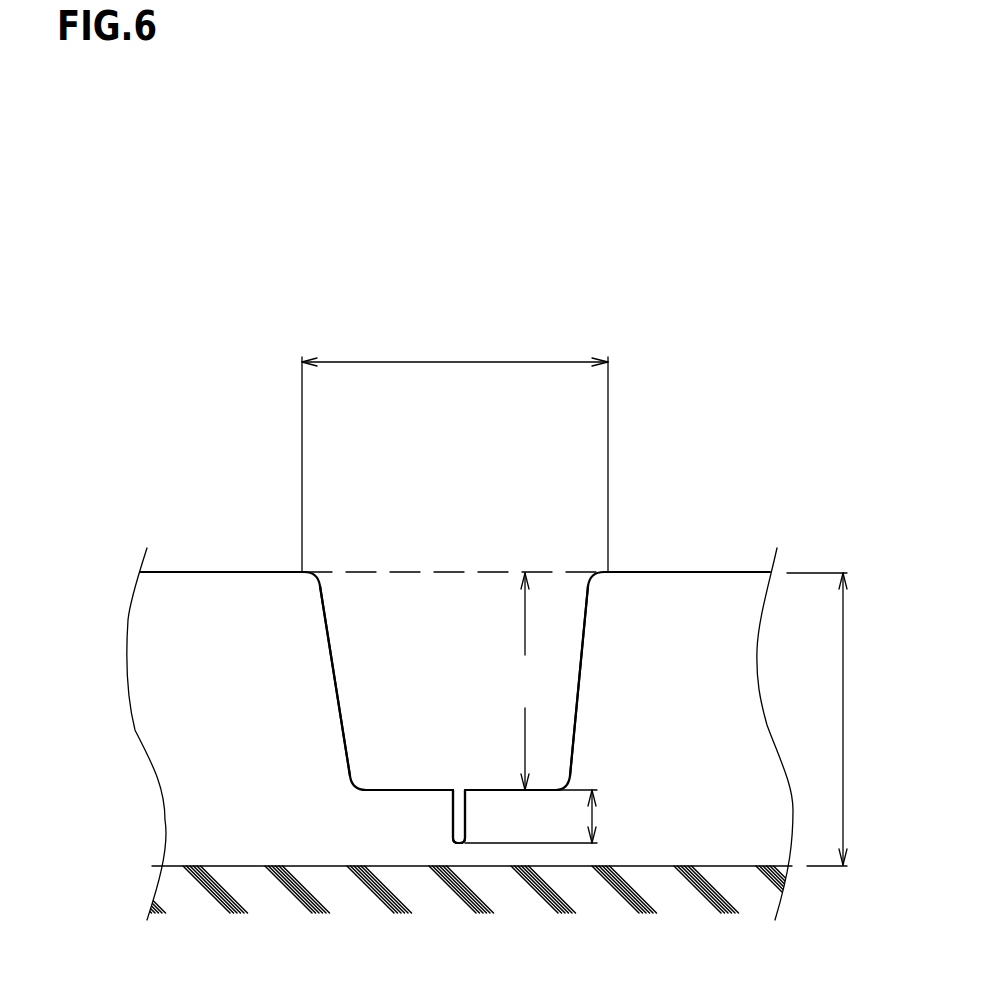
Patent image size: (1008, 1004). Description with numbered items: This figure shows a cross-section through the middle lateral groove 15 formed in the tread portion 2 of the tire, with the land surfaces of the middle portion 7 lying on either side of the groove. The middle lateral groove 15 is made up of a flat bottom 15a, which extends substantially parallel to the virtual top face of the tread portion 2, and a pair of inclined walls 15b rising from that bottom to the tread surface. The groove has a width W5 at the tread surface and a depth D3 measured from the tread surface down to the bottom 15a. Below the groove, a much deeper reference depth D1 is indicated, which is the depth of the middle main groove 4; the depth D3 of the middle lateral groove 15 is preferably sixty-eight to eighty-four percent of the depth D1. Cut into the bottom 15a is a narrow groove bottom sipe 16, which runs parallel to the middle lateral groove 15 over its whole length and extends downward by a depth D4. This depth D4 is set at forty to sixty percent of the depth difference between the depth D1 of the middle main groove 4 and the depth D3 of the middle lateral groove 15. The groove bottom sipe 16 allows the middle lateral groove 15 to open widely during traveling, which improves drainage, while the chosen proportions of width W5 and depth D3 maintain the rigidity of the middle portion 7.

The tread portion 2 is at (642, 453).
The middle main groove 4 is at (710, 867).
The middle portion 7 is at (223, 572).
The middle lateral groove 15 is at (418, 590).
The bottom 15a is at (410, 790).
The wall 15b is at (336, 716).
The groove bottom sipe 16 is at (461, 774).
The width of the middle lateral groove W5 is at (455, 451).
The depth of the middle main groove D1 is at (837, 719).
The depth of the middle lateral groove D3 is at (525, 681).
The depth of the groove bottom sipe D4 is at (554, 816).